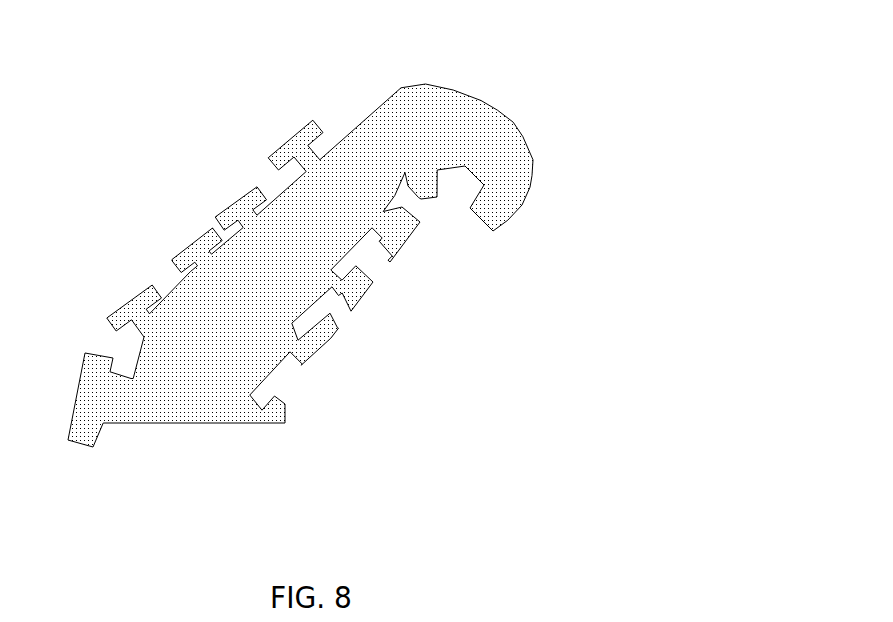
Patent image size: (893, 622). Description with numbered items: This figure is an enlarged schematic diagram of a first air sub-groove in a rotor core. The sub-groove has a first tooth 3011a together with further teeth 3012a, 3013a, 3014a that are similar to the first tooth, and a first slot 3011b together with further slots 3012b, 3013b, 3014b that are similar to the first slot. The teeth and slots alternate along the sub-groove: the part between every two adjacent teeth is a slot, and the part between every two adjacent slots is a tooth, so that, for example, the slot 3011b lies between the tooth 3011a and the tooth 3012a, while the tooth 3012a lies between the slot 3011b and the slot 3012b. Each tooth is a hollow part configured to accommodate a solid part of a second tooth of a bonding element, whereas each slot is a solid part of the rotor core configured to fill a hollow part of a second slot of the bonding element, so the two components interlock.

The first tooth 3011a is at (138, 297).
The tooth 3012a is at (186, 247).
The tooth 3013a is at (240, 197).
The tooth 3014a is at (298, 132).
The first slot 3011b is at (172, 290).
The slot 3012b is at (223, 237).
The slot 3013b is at (278, 185).
The slot 3014b is at (333, 125).